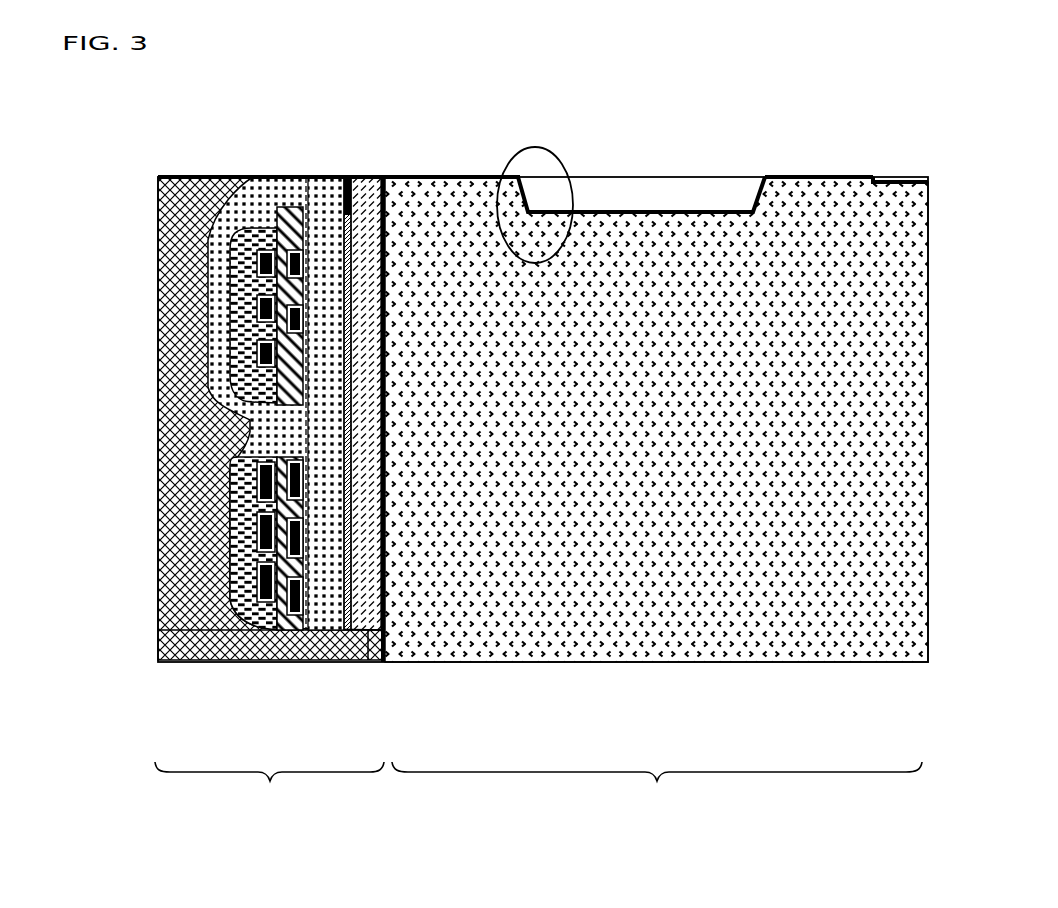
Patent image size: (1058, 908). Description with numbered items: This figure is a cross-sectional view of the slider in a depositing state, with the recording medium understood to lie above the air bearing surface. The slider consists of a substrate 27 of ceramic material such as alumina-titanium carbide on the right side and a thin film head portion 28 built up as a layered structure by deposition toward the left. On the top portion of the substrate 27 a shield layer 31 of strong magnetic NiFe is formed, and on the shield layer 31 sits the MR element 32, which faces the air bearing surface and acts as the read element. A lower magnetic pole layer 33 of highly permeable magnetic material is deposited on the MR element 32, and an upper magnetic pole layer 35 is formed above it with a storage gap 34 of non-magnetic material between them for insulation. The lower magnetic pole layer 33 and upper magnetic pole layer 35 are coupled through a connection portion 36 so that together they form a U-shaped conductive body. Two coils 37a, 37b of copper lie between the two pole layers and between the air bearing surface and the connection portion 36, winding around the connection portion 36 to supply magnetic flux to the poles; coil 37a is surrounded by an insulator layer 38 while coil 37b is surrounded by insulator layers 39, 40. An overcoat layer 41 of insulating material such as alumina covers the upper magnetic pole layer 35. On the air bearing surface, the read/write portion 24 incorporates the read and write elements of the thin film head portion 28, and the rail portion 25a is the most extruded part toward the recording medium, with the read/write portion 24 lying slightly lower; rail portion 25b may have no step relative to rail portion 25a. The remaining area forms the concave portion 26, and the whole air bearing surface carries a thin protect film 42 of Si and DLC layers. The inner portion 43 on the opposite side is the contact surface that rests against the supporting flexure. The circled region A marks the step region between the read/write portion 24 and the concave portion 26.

The read/write portion 24 is at (447, 177).
The rail portion 25a is at (805, 177).
The rail portion 25b is at (900, 182).
The concave portion 26 is at (688, 212).
The substrate 27 is at (657, 790).
The thin film head portion 28 is at (269, 787).
The shield layer 31 is at (363, 662).
The MR element 32 is at (350, 177).
The lower magnetic pole layer 33 is at (335, 177).
The storage gap 34 is at (303, 177).
The upper magnetic pole layer 35 is at (252, 177).
The connection portion 36 is at (285, 425).
The coil 37a is at (250, 283).
The coil 37b is at (230, 354).
The insulator layer 38 is at (277, 230).
The insulator layer 39 is at (255, 328).
The insulator layer 40 is at (245, 528).
The overcoat layer 41 is at (158, 640).
The protect film 42 is at (158, 177).
The inner portion 43 is at (708, 662).
The detail area A is at (552, 148).